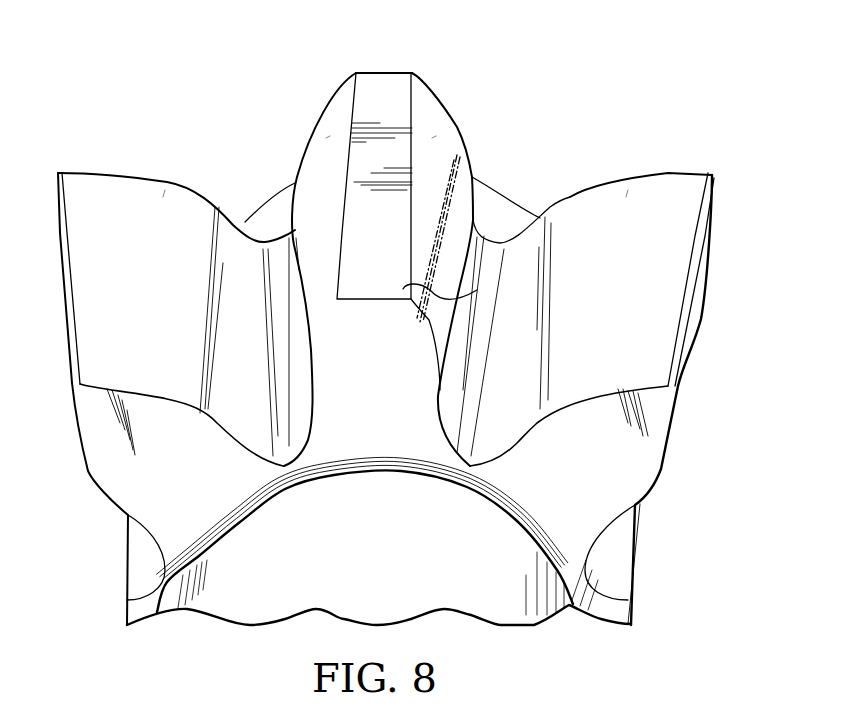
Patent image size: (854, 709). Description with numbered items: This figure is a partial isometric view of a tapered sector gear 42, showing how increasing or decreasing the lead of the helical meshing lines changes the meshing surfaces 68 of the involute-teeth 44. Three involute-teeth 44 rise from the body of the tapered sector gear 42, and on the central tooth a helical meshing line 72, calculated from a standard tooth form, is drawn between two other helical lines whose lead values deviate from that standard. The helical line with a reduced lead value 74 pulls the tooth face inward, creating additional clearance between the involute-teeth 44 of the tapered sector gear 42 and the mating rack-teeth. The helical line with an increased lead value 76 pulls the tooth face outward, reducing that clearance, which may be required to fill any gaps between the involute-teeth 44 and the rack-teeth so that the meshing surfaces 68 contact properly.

The tapered sector gear 42 is at (604, 56).
The involute-teeth 44 is at (115, 160).
The meshing surfaces 68 is at (163, 197).
The helical meshing line 72 is at (431, 318).
The helical line with a reduced lead value 74 is at (411, 286).
The helical line with an increased lead value 76 is at (477, 290).